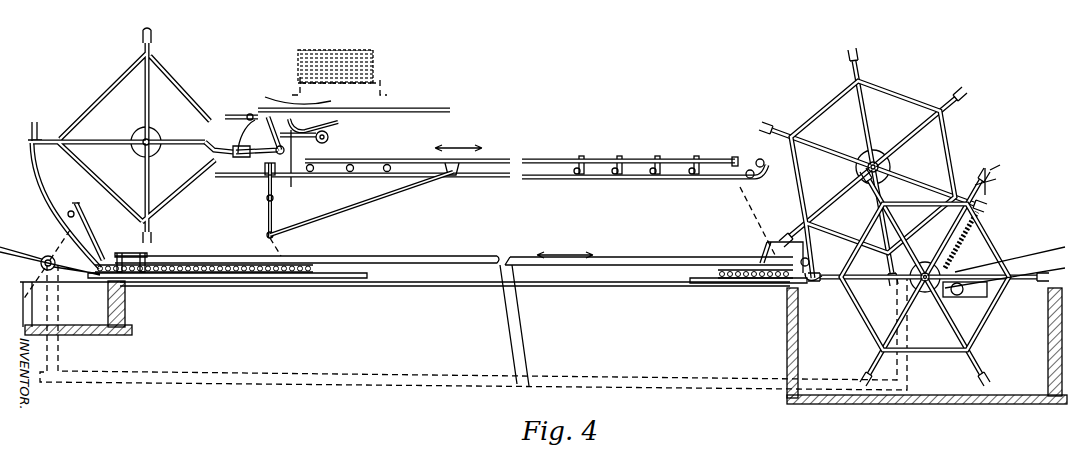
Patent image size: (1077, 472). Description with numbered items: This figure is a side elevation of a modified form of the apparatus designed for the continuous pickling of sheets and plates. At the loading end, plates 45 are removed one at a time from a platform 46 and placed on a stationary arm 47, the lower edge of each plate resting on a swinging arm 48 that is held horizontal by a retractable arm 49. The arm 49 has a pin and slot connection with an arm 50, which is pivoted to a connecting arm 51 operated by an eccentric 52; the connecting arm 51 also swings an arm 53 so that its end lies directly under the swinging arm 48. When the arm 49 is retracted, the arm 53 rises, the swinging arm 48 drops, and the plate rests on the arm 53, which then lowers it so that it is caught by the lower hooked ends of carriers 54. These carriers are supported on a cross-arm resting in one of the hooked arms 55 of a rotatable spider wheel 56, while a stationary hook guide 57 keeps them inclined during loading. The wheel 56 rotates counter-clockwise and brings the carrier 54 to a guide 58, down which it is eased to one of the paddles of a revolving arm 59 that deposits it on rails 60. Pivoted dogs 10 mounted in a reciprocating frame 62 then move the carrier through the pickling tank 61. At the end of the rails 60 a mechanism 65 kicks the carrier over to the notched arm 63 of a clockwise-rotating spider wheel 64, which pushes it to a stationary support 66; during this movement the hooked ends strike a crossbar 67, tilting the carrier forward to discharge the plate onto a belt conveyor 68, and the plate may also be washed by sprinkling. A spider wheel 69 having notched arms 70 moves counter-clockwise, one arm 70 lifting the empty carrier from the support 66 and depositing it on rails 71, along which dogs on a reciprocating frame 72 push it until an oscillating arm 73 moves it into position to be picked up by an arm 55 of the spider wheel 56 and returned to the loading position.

The dog 10 is at (151, 246).
The plate 45 is at (357, 53).
The platform 46 is at (377, 83).
The stationary arm 47 is at (305, 102).
The swinging arm 48 is at (250, 110).
The retractable arm 49 is at (339, 122).
The arm 50 is at (258, 137).
The connecting arm 51 is at (362, 166).
The eccentric 52 is at (330, 137).
The arm 53 is at (262, 172).
The carrier 54 is at (69, 211).
The hooked arm 55 is at (150, 37).
The spider wheel 56 is at (99, 118).
The stationary hook guide 57 is at (213, 143).
The guide 58 is at (33, 174).
The revolving arm 59 is at (44, 256).
The rails 60 is at (340, 273).
The pickling tank 61 is at (380, 380).
The reciprocating frame 62 is at (450, 257).
The notched arm 63 is at (833, 281).
The spider wheel 64 is at (917, 343).
The mechanism 65 is at (807, 245).
The stationary support 66 is at (997, 190).
The crossbar 67 is at (953, 290).
The belt conveyor 68 is at (1028, 248).
The spider wheel 69 is at (880, 103).
The notched arm 70 is at (902, 148).
The rails 71 is at (671, 183).
The reciprocating frame 72 is at (548, 161).
The oscillating arm 73 is at (266, 218).